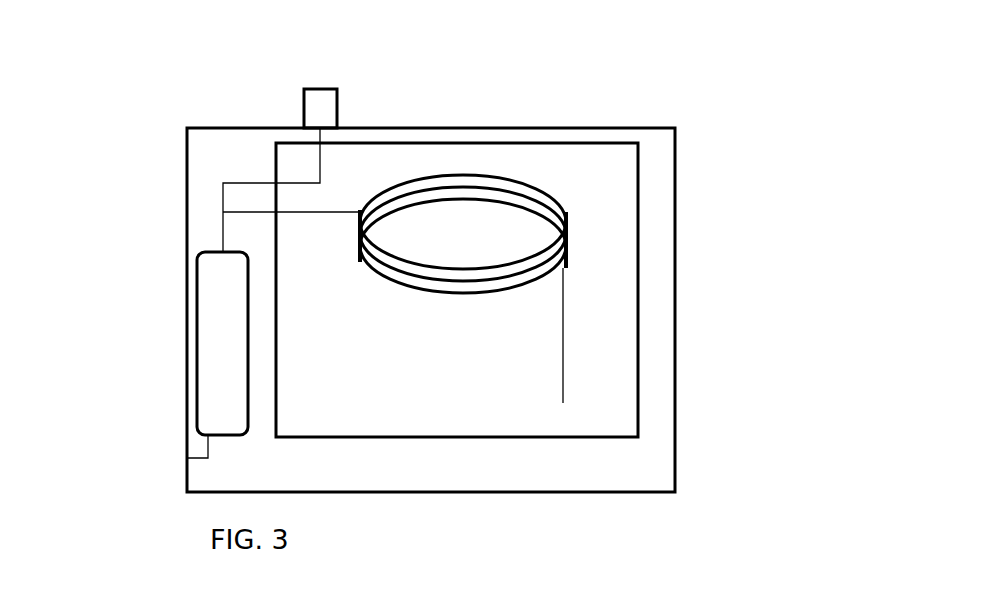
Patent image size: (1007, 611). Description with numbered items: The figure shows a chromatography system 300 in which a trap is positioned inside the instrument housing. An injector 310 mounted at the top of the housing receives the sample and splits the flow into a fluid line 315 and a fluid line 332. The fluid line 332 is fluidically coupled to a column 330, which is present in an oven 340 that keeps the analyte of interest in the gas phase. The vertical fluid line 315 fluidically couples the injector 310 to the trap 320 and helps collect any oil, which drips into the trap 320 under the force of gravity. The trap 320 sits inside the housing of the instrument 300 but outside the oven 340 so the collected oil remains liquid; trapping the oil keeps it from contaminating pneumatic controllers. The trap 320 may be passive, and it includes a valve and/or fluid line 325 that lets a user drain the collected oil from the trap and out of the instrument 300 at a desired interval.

The system 300 is at (572, 107).
The injector 310 is at (314, 111).
The fluid line 315 is at (223, 233).
The trap 320 is at (197, 330).
The valve and/or fluid line 325 is at (186, 458).
The column 330 is at (488, 215).
The fluid line 332 is at (290, 215).
The oven 340 is at (485, 445).